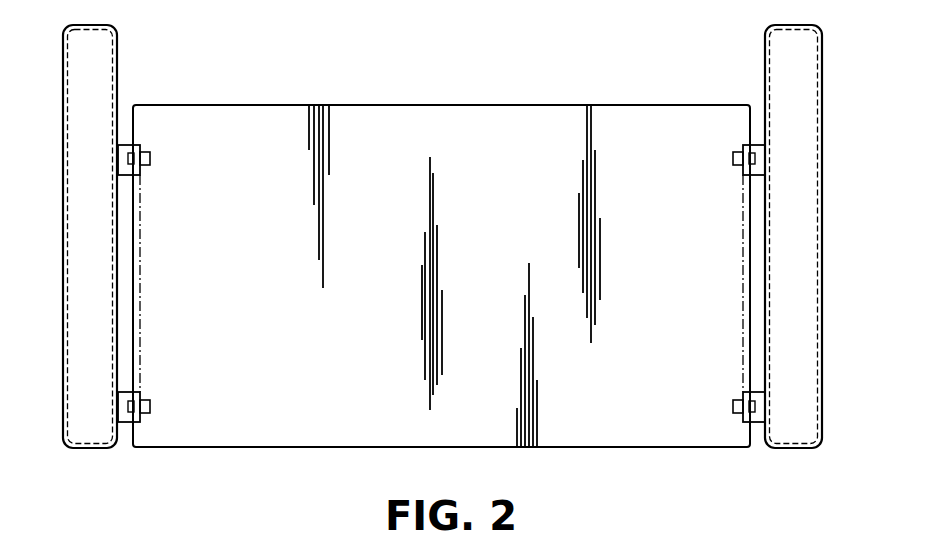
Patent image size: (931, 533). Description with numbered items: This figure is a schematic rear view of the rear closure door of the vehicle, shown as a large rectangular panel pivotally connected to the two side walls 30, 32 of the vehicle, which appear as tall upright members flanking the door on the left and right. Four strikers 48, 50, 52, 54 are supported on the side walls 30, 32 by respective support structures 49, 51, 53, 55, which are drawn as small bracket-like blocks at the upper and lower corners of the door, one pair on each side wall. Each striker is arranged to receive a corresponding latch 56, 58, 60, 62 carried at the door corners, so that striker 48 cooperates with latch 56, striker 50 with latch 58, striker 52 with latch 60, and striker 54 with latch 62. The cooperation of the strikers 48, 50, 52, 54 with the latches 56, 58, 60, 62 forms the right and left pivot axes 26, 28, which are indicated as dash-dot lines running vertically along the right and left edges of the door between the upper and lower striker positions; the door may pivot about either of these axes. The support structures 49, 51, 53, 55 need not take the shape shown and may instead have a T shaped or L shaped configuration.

The right pivot axis 26 is at (743, 262).
The left pivot axis 28 is at (140, 262).
The side wall 30 is at (63, 255).
The side wall 32 is at (822, 255).
The striker 48 is at (733, 152).
The support structure 49 is at (760, 145).
The striker 50 is at (150, 152).
The support structure 51 is at (123, 145).
The striker 52 is at (733, 413).
The support structure 53 is at (760, 422).
The striker 54 is at (150, 413).
The support structure 55 is at (123, 422).
The latch 56 is at (733, 160).
The latch 58 is at (150, 160).
The latch 60 is at (731, 404).
The latch 62 is at (152, 404).